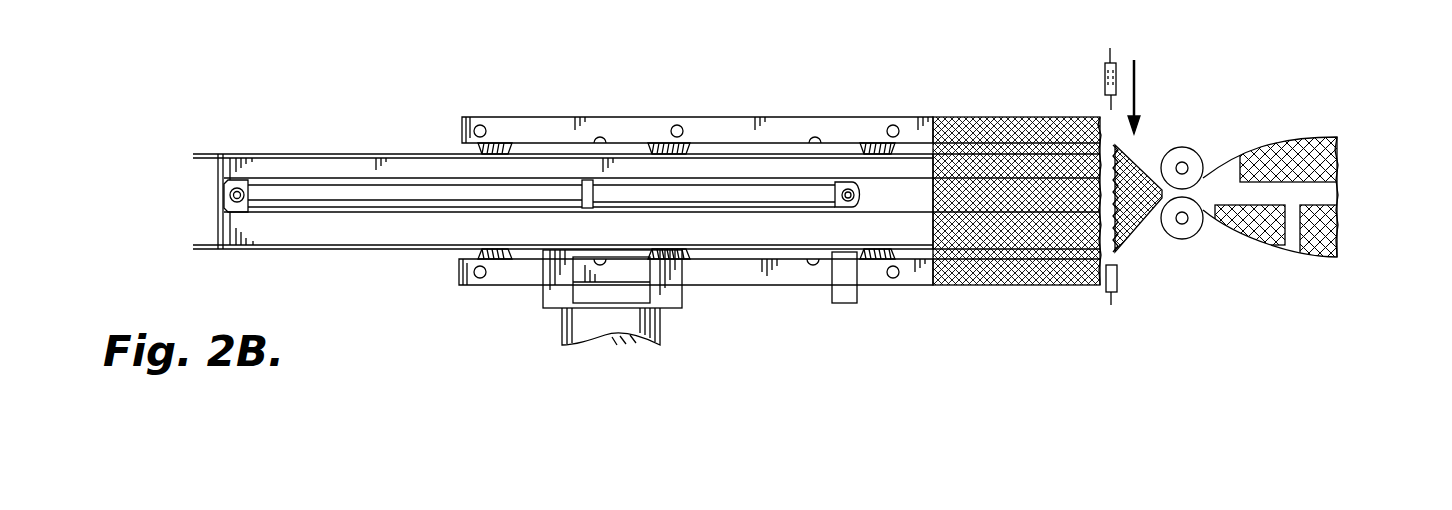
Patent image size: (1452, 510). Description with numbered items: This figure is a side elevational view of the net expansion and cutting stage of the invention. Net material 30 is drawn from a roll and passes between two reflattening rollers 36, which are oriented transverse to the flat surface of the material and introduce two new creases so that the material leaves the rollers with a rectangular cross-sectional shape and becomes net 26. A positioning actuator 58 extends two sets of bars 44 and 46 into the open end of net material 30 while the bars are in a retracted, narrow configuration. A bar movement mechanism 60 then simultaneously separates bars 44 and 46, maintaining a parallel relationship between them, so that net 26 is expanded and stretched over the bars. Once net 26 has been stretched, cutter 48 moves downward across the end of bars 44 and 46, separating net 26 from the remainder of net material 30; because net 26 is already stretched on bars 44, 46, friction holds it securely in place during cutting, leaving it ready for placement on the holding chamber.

The net 26 is at (1005, 120).
The net material 30 is at (1323, 195).
The reflattening rollers 36 is at (1190, 148).
The bars 44 is at (777, 125).
The bars 46 is at (765, 278).
The cutter 48 is at (1108, 50).
The positioning actuator 58 is at (280, 193).
The bar movement mechanism 60 is at (604, 80).